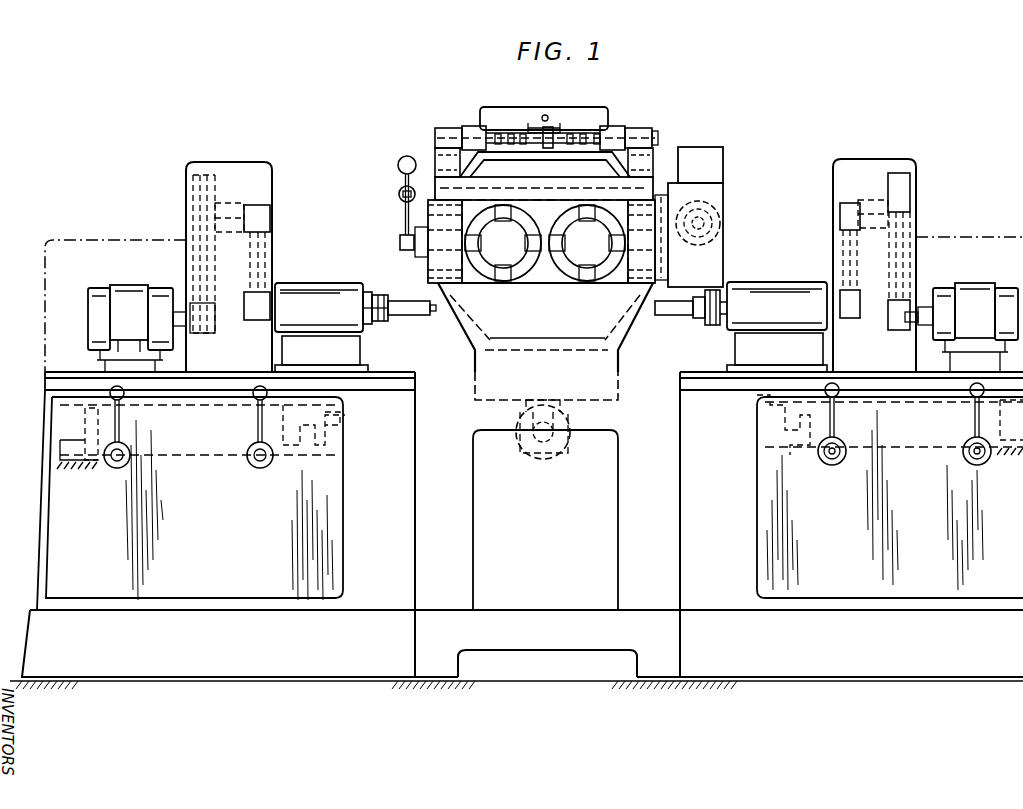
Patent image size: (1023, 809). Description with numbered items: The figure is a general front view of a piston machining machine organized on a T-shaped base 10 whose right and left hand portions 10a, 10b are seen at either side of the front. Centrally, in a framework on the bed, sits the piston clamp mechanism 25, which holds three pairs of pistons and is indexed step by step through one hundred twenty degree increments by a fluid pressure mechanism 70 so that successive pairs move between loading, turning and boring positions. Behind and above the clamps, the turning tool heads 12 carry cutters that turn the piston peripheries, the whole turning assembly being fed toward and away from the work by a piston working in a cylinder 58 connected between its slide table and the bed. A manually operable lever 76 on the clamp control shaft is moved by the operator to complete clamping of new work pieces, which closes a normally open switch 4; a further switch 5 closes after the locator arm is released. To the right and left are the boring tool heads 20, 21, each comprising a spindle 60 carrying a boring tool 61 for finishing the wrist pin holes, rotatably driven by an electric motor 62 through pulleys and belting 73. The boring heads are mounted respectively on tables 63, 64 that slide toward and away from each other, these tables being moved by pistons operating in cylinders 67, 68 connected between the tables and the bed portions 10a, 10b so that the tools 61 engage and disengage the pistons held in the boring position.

The switch 5 is at (548, 116).
The piston clamp mechanism 25 is at (668, 136).
The manually operable lever 76 is at (410, 157).
The switch 4 is at (398, 194).
The pulleys and belting 73 is at (236, 185).
The fluid pressure mechanism 70 is at (731, 195).
The boring tool spindle 20 is at (778, 283).
The electric motor 62 is at (100, 306).
The turning tool heads 12 is at (559, 278).
The spindle 60 is at (418, 297).
The boring tool 61 is at (447, 316).
The boring tool spindle 21 is at (390, 337).
The table 64 is at (218, 378).
The table 63 is at (868, 372).
The cylinder 68 is at (222, 452).
The cylinder 67 is at (940, 443).
The cylinder 58 is at (555, 458).
The base 10 is at (564, 642).
The right hand portion 10a is at (893, 660).
The left hand portion 10b is at (250, 665).